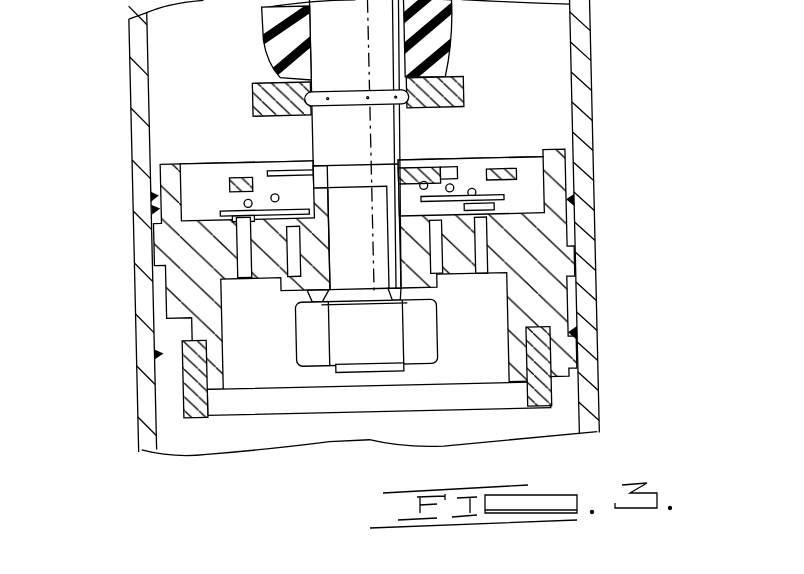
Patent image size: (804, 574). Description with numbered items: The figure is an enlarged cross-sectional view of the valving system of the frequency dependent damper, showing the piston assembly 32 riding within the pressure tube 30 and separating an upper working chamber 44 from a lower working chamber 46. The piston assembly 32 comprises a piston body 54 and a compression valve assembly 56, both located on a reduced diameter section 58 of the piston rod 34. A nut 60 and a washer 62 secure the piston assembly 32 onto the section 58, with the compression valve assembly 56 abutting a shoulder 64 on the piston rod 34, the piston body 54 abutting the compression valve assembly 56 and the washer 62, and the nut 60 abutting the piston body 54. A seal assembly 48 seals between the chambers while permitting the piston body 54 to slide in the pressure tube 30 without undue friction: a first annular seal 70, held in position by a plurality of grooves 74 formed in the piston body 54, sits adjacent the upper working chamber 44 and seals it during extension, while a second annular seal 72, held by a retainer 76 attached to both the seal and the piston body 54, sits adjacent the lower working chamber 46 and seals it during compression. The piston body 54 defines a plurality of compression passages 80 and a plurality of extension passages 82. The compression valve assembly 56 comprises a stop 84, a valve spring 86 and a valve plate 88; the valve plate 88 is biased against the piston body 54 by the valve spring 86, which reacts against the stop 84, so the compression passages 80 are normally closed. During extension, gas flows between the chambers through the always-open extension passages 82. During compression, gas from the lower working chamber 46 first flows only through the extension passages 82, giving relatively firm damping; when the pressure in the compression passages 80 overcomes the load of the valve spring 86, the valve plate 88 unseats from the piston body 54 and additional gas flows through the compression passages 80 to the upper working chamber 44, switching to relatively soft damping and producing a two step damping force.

The pressure tube 30 is at (144, 424).
The piston assembly 32 is at (633, 83).
The piston rod 34 is at (347, 51).
The upper working chamber 44 is at (503, 66).
The lower working chamber 46 is at (413, 440).
The seal assembly 48 is at (134, 231).
The piston body 54 is at (531, 233).
The compression valve assembly 56 is at (253, 140).
The reduced diameter section 58 is at (347, 249).
The nut 60 is at (419, 337).
The washer 62 is at (313, 288).
The shoulder 64 is at (323, 165).
The first annular seal 70 is at (159, 201).
The second annular seal 72 is at (155, 346).
The grooves 74 is at (157, 187).
The retainer 76 is at (168, 383).
The compression passages 80 is at (481, 262).
The extension passages 82 is at (437, 268).
The stop 84 is at (490, 179).
The valve spring 86 is at (512, 189).
The valve plate 88 is at (455, 188).